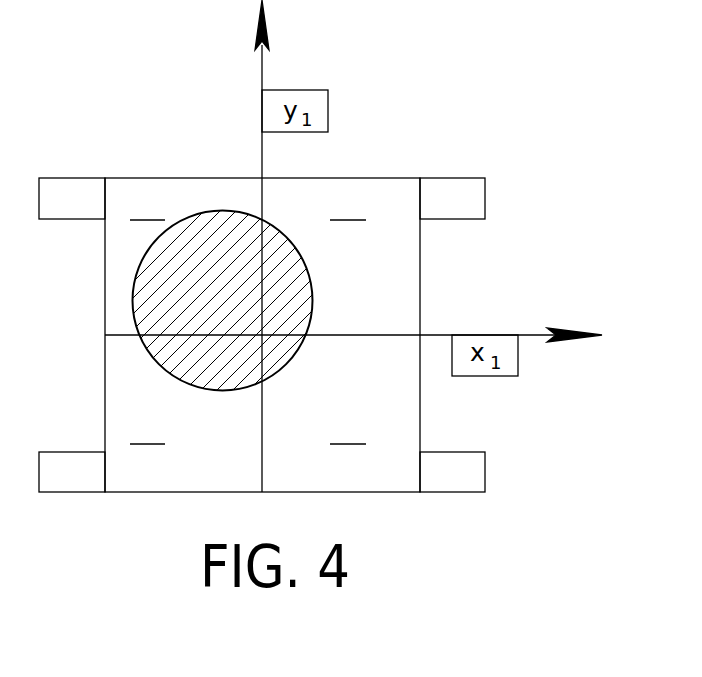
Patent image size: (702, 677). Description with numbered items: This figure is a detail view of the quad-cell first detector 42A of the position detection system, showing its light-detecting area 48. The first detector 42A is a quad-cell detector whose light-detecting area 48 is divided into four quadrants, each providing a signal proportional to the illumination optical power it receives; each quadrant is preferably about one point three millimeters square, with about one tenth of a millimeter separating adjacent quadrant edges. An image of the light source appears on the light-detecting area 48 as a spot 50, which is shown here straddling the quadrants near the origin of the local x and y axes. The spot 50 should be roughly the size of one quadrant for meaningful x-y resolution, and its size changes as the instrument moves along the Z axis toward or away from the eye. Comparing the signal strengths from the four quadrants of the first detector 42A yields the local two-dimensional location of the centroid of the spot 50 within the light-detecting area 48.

The light-detecting area 48 is at (190, 178).
The first detector 42A is at (392, 149).
The spot 50 is at (310, 262).